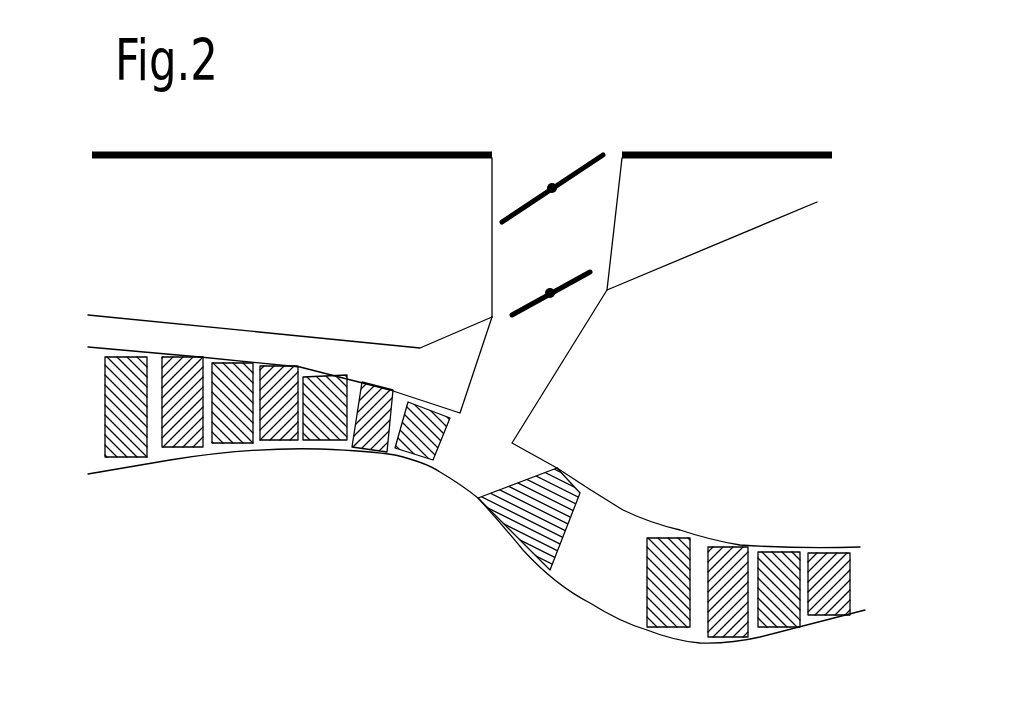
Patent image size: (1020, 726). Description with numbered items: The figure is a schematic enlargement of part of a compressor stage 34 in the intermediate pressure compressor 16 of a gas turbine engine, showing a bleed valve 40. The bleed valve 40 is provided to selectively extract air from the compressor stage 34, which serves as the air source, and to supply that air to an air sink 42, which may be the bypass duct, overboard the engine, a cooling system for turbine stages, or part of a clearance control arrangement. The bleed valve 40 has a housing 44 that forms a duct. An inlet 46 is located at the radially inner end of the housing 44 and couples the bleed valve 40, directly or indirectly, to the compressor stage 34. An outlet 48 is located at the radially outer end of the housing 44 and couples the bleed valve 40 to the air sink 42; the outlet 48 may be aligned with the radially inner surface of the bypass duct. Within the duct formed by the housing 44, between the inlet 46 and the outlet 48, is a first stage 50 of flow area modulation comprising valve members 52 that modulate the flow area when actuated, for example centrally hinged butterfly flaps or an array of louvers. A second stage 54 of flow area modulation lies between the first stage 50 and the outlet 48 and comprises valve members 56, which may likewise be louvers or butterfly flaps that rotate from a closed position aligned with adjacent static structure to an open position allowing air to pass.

The intermediate pressure compressor 16 is at (152, 317).
The compressor stage 34 is at (303, 472).
The bleed valve 40 is at (413, 242).
The air sink 42 is at (295, 117).
The housing 44 is at (613, 237).
The inlet 46 is at (490, 430).
The outlet 48 is at (555, 133).
The first stage of flow area modulation 50 is at (512, 283).
The valve members 52 is at (573, 277).
The second stage of flow area modulation 54 is at (592, 143).
The valve members 56 is at (533, 195).